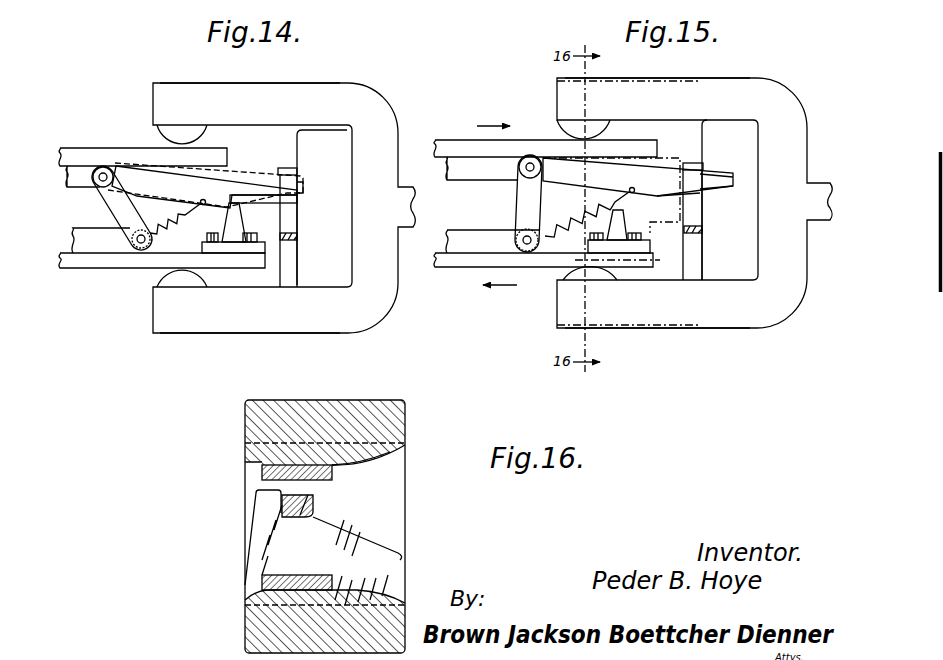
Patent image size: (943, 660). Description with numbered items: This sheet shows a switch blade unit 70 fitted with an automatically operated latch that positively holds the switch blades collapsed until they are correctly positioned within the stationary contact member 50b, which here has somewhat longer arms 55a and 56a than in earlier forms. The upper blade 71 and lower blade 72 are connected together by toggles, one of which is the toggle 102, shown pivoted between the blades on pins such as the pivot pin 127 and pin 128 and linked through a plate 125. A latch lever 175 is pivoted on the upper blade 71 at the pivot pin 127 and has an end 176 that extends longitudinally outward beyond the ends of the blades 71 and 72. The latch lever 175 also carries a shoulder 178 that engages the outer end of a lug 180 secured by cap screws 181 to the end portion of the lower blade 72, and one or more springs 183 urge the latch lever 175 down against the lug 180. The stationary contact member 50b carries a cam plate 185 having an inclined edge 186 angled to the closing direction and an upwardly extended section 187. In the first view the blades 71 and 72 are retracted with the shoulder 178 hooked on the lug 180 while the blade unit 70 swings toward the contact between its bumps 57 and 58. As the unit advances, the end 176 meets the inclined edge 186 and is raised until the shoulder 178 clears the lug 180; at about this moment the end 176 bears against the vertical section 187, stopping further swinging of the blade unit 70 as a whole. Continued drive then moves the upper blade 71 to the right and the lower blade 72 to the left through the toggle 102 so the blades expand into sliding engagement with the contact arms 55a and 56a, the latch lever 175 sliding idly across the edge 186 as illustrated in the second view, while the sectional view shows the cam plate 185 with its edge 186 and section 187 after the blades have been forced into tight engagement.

In FIG. 14, the stationary contact member 50b is at (399, 99).
In FIG. 15, the stationary contact member 50b is at (791, 86).
In FIG. 16, the stationary contact member 50b is at (369, 397).
In FIG. 14, the upper contact arm 55a is at (272, 93).
In FIG. 15, the upper contact arm 55a is at (685, 83).
In FIG. 16, the upper contact arm 55a is at (245, 421).
In FIG. 14, the lower contact arm 56a is at (270, 322).
In FIG. 15, the lower contact arm 56a is at (687, 318).
In FIG. 16, the lower contact arm 56a is at (247, 625).
In FIG. 14, the upper fulcrum bump 57 is at (178, 138).
In FIG. 15, the upper fulcrum bump 57 is at (585, 130).
In FIG. 16, the upper fulcrum bump 57 is at (245, 463).
In FIG. 14, the lower fulcrum bump 58 is at (168, 274).
In FIG. 15, the lower fulcrum bump 58 is at (578, 267).
In FIG. 16, the lower fulcrum bump 58 is at (330, 596).
In FIG. 14, the blade unit 70 is at (138, 128).
In FIG. 14, the upper blade 71 is at (70, 154).
In FIG. 15, the upper blade 71 is at (448, 147).
In FIG. 16, the upper blade 71 is at (333, 472).
In FIG. 14, the lower blade 72 is at (96, 268).
In FIG. 15, the lower blade 72 is at (467, 264).
In FIG. 16, the lower blade 72 is at (265, 575).
In FIG. 14, the toggle 102 is at (117, 212).
In FIG. 15, the toggle 102 is at (515, 210).
In FIG. 14, the carriage plate 125 is at (78, 182).
In FIG. 15, the carriage plate 125 is at (466, 175).
In FIG. 14, the pivot pin 127 is at (103, 167).
In FIG. 15, the pivot pin 127 is at (530, 162).
In FIG. 14, the lower pivot pin 128 is at (136, 247).
In FIG. 15, the lower pivot pin 128 is at (540, 241).
In FIG. 14, the latch lever 175 is at (131, 176).
In FIG. 15, the latch lever 175 is at (637, 175).
In FIG. 14, the end of latch lever 176 is at (298, 200).
In FIG. 15, the end of latch lever 176 is at (715, 177).
In FIG. 16, the end of latch lever 176 is at (313, 503).
In FIG. 14, the shoulder 178 is at (238, 210).
In FIG. 15, the shoulder 178 is at (680, 198).
In FIG. 14, the lug 180 is at (227, 227).
In FIG. 15, the lug 180 is at (622, 212).
In FIG. 14, the cap screws 181 is at (212, 234).
In FIG. 15, the cap screws 181 is at (643, 238).
In FIG. 14, the springs 183 is at (178, 224).
In FIG. 15, the springs 183 is at (590, 203).
In FIG. 14, the cam plate 185 is at (292, 258).
In FIG. 15, the cam plate 185 is at (698, 247).
In FIG. 16, the cam plate 185 is at (387, 555).
In FIG. 14, the inclined edge 186 is at (322, 207).
In FIG. 15, the inclined edge 186 is at (704, 200).
In FIG. 16, the inclined edge 186 is at (370, 537).
In FIG. 14, the upwardly extended section 187 is at (288, 168).
In FIG. 15, the upwardly extended section 187 is at (697, 162).
In FIG. 16, the upwardly extended section 187 is at (257, 497).